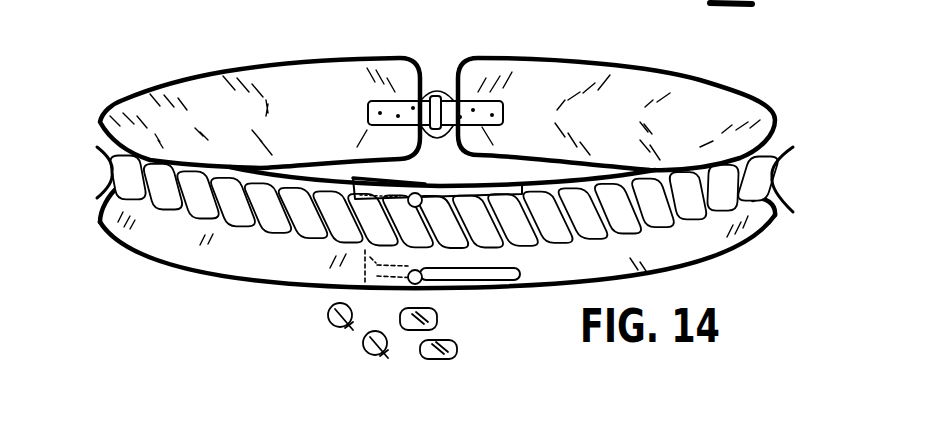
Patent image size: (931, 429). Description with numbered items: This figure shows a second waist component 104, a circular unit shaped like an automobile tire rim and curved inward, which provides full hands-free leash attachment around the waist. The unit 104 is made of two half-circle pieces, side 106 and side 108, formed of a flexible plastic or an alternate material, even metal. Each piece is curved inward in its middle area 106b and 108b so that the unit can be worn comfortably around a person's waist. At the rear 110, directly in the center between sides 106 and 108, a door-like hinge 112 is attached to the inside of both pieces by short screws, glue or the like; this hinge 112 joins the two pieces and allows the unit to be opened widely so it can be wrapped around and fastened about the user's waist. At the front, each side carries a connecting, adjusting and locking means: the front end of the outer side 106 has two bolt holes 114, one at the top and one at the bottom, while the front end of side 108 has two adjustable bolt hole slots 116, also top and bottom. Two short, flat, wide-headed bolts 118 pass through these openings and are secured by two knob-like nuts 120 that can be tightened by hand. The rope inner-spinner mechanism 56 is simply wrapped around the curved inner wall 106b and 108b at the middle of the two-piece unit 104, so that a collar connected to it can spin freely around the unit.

The rope inner-spinner mechanism 56 is at (653, 220).
The second waist component 104 is at (416, 97).
The side 106 is at (128, 107).
The middle area 106b is at (110, 170).
The side 108 is at (700, 95).
The middle area 108b is at (777, 177).
The rear 110 is at (432, 62).
The hinge 112 is at (450, 108).
The bolt holes 114 is at (418, 280).
The adjustable bolt hole slots 116 is at (472, 278).
The bolts 118 is at (367, 350).
The nuts 120 is at (437, 352).